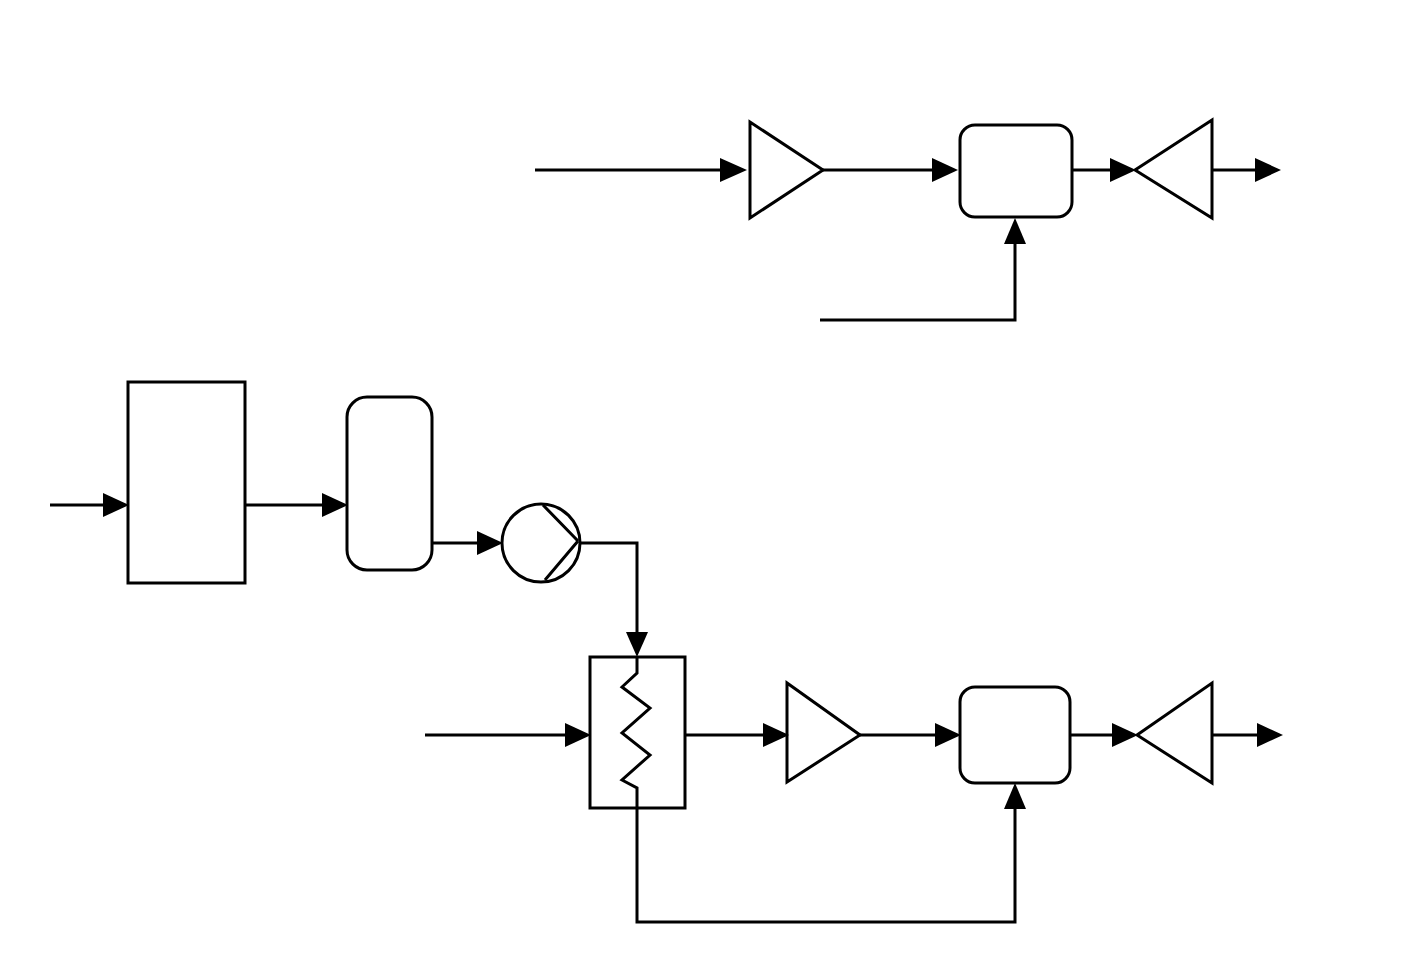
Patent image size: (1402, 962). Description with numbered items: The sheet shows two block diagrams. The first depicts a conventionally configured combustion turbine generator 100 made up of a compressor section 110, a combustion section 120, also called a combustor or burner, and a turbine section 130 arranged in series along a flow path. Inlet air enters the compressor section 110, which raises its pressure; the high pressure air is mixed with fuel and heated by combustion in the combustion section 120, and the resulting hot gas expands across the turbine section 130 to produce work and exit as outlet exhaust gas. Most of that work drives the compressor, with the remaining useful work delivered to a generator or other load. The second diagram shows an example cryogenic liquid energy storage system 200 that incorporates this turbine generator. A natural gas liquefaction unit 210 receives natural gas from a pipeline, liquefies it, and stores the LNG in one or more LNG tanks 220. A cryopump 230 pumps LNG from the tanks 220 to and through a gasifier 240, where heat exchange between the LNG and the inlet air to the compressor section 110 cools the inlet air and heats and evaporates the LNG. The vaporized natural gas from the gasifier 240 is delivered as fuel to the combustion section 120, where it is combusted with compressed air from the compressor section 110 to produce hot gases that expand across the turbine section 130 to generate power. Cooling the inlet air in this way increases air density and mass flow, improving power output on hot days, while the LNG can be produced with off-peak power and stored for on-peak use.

In FIG. 1, the combustion turbine generator 100 is at (603, 52).
In FIG. 1, the compressor section 110 is at (748, 185).
In FIG. 2, the compressor section 110 is at (788, 755).
In FIG. 1, the combustion section 120 is at (961, 185).
In FIG. 2, the combustion section 120 is at (961, 758).
In FIG. 1, the turbine section 130 is at (1160, 188).
In FIG. 2, the turbine section 130 is at (1165, 755).
In FIG. 2, the cryogenic liquid energy storage system 200 is at (1141, 474).
In FIG. 2, the natural gas liquefaction unit 210 is at (129, 540).
In FIG. 2, the LNG tank 220 is at (348, 535).
In FIG. 2, the cryopump 230 is at (505, 560).
In FIG. 2, the gasifier 240 is at (591, 758).